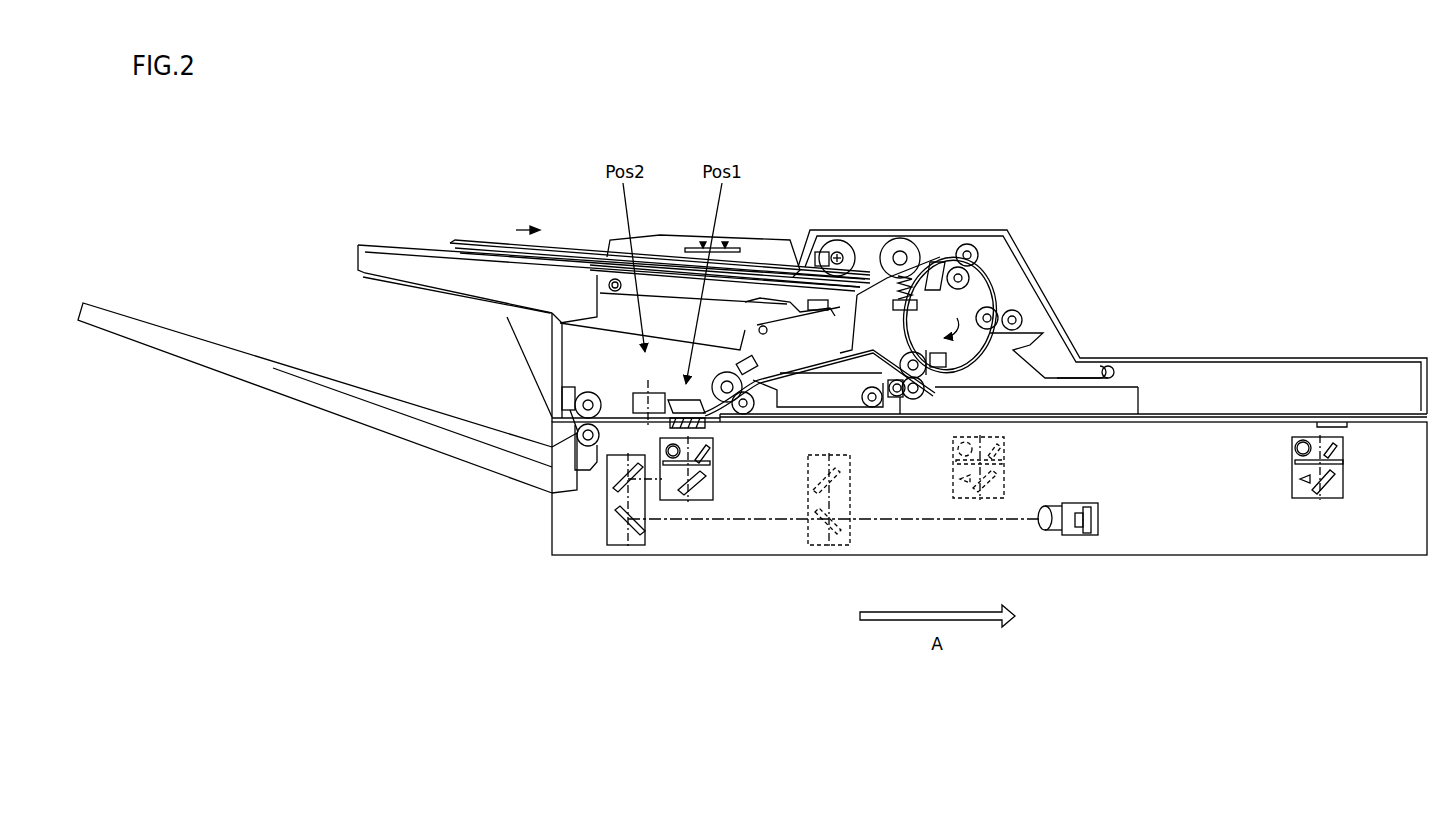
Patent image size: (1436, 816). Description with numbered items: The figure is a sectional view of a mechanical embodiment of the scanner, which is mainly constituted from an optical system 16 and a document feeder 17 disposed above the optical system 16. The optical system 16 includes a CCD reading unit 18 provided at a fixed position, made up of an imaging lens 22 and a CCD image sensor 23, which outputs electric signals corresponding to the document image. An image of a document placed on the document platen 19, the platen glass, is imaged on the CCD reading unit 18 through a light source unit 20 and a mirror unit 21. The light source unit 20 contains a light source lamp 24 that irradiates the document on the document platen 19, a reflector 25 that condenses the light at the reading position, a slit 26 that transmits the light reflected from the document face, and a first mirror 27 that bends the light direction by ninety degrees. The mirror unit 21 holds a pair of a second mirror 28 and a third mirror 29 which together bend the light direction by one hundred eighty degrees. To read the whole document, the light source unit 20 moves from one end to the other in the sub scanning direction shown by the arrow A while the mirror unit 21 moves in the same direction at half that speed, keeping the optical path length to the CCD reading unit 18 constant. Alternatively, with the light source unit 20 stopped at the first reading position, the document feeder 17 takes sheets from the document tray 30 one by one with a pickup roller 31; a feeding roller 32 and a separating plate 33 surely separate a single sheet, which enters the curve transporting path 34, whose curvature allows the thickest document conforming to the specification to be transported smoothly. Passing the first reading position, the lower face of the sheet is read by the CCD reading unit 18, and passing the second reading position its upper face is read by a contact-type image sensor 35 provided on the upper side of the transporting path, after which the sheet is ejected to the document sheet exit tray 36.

The optical system 16 is at (1120, 617).
The document feeder 17 is at (1028, 195).
The CCD reading unit 18 is at (1097, 536).
The document platen 19 is at (1127, 425).
The light source unit 20 is at (708, 491).
The mirror unit 21 is at (605, 526).
The imaging lens 22 is at (1043, 532).
The CCD image sensor 23 is at (1090, 535).
The light source lamp 24 is at (660, 442).
The reflector 25 is at (713, 455).
The slit 26 is at (700, 468).
The first mirror 27 is at (705, 488).
The second mirror 28 is at (613, 483).
The third mirror 29 is at (618, 517).
The document tray 30 is at (388, 247).
The pickup roller 31 is at (841, 250).
The feeding roller 32 is at (902, 246).
The separating plate 33 is at (912, 278).
The curve transporting path 34 is at (1000, 293).
The contact-type image sensor 35 is at (656, 378).
The document sheet exit tray 36 is at (173, 333).